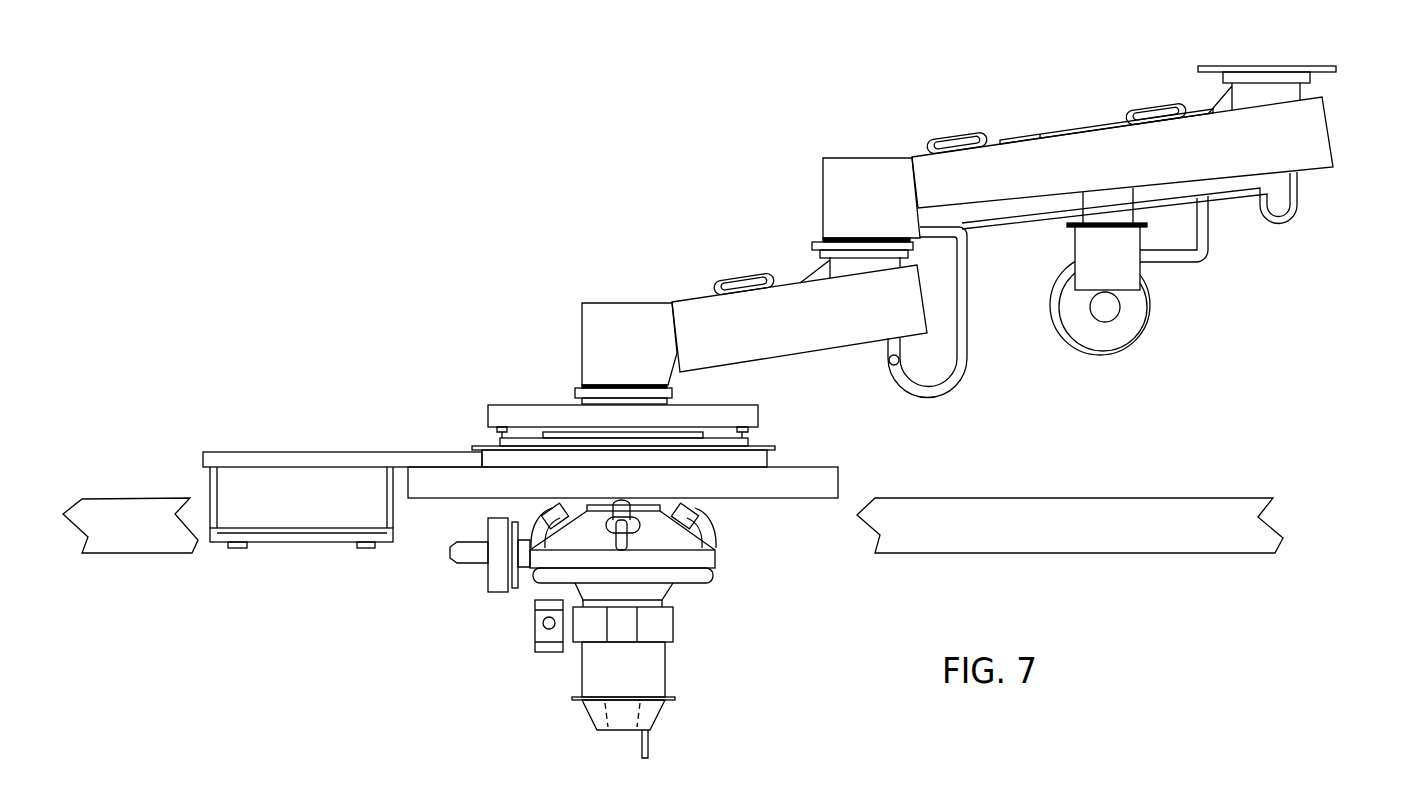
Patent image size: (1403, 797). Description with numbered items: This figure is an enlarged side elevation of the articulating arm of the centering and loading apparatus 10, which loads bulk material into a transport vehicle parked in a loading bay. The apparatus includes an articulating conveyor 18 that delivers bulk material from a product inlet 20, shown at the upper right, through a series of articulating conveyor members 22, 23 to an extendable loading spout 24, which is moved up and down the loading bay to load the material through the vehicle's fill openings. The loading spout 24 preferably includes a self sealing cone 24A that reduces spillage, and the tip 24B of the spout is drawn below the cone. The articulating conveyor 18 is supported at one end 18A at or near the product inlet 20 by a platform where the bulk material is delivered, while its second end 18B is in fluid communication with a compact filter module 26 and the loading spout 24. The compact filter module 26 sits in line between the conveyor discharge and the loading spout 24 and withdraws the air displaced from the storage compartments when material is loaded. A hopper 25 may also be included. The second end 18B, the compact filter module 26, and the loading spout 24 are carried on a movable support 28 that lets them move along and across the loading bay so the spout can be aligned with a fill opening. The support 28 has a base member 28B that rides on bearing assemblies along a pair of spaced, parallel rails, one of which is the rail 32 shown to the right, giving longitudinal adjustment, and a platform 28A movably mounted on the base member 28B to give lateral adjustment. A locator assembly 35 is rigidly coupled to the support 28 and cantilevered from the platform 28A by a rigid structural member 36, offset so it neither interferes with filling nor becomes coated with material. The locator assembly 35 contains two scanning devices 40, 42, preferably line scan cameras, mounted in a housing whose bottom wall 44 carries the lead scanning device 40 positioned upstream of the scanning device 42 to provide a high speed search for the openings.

The centering and loading apparatus 10 is at (680, 220).
The articulating conveyor 18 is at (568, 283).
The first end of articulating conveyor 18A is at (1347, 128).
The second end of articulating conveyor 18B is at (557, 403).
The product inlet 20 is at (1203, 78).
The articulating conveyor member 22 is at (985, 187).
The articulating conveyor member 23 is at (827, 340).
The extendable loading spout 24 is at (690, 683).
The self sealing cone 24A is at (603, 712).
The nozzle tip 24B is at (648, 747).
The hopper 25 is at (707, 435).
The compact filter module 26 is at (735, 562).
The movable support 28 is at (790, 452).
The platform 28A is at (503, 413).
The base member 28B is at (835, 482).
The rail 32 is at (1068, 512).
The locator assembly 35 is at (220, 578).
The rigid structural member 36 is at (355, 458).
The scanning device 40 is at (237, 547).
The scanning device 42 is at (365, 548).
The bottom wall 44 is at (280, 533).